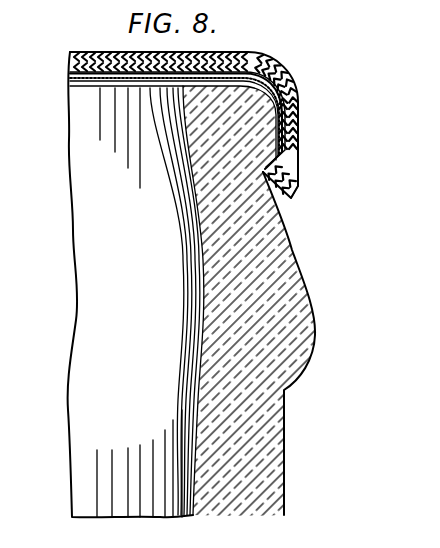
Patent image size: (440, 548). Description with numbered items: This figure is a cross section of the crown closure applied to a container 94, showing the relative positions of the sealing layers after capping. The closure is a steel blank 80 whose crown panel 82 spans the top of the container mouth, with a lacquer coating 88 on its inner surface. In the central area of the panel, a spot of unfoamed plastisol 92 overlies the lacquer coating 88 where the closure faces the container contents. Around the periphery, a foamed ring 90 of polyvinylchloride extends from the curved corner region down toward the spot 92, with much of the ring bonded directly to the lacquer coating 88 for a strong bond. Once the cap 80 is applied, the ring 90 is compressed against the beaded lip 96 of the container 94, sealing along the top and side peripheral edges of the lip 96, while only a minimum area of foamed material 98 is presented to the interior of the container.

The steel blank 80 is at (180, 100).
The crown panel 82 is at (95, 56).
The lacquer coating 88 is at (290, 89).
The foamed ring 90 is at (278, 74).
The unfoamed plastisol spot 92 is at (68, 73).
The container 94 is at (283, 338).
The lip 96 is at (215, 132).
The area of contact 98 is at (213, 63).